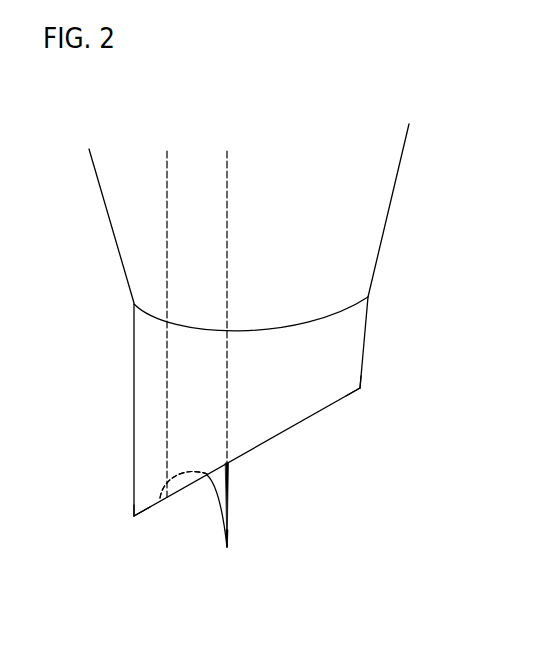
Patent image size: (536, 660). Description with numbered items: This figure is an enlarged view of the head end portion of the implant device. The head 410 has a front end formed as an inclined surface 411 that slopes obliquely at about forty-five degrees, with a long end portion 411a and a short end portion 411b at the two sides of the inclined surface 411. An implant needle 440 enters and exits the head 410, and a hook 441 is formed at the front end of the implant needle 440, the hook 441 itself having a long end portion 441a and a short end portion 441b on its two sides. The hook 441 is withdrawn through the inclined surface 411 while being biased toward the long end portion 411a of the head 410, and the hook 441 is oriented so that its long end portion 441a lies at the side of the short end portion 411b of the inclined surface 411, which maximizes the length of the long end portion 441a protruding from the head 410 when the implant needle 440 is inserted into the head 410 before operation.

The head 410 is at (382, 193).
The implant needle 440 is at (167, 358).
The inclined surface 411 is at (262, 442).
The long end portion 411a is at (134, 518).
The short end portion 411b is at (360, 389).
The hook 441 is at (198, 481).
The long end portion 441a is at (227, 549).
The short end portion 441b is at (160, 499).